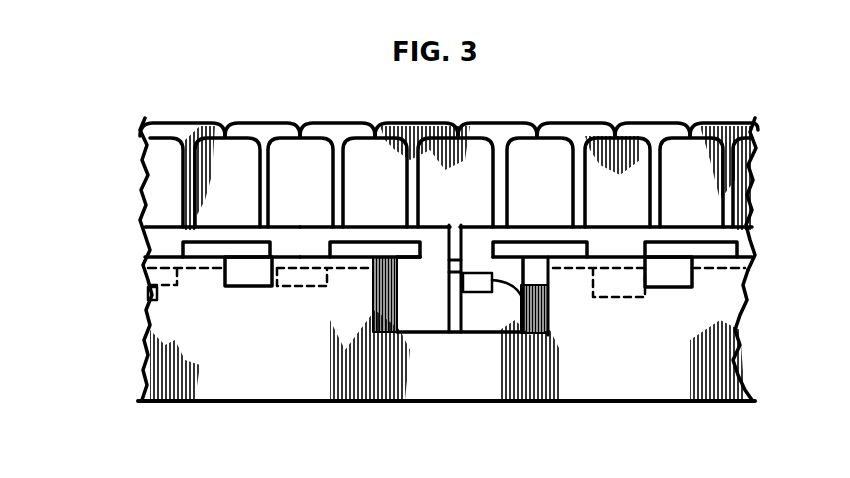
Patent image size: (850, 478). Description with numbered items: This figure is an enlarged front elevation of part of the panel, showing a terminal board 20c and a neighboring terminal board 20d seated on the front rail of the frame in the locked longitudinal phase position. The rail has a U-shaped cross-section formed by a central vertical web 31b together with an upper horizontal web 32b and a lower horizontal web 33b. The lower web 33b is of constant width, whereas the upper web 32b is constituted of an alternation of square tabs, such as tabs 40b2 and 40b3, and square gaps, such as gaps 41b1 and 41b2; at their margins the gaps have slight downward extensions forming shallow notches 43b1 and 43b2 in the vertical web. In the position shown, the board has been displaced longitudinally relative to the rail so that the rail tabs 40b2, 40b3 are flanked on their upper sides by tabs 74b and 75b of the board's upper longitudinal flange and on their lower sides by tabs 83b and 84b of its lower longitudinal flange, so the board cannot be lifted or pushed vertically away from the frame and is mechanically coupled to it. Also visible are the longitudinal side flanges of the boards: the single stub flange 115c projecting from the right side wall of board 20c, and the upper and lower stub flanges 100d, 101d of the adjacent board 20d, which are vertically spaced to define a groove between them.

The terminal board 20c is at (142, 240).
The terminal board 20d is at (753, 235).
The tab 40b3 is at (140, 266).
The tab 84b is at (148, 301).
The central vertical web 31b is at (153, 337).
The tab 75b is at (233, 243).
The gap 41b2 is at (254, 268).
The tab 74b is at (388, 243).
The upper stub flange 100d is at (458, 233).
The notch 43b2 is at (232, 286).
The tab 40b2 is at (281, 296).
The tab 83b is at (302, 298).
The notch 43b1 is at (378, 286).
The gap 41b1 is at (385, 270).
The lower stub flange 101d is at (455, 322).
The stub flange 115c is at (548, 303).
The upper horizontal web 32b is at (753, 266).
The lower horizontal web 33b is at (468, 403).